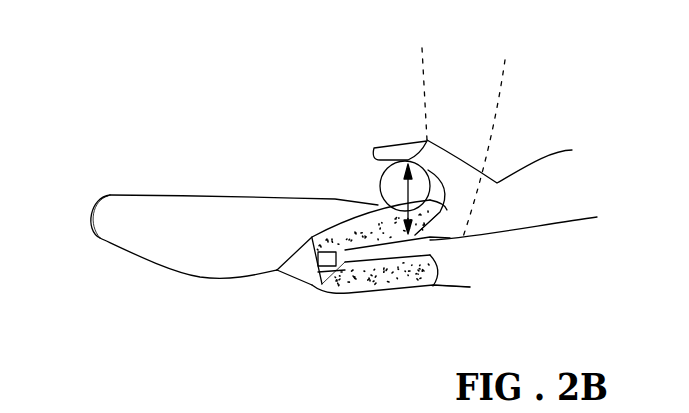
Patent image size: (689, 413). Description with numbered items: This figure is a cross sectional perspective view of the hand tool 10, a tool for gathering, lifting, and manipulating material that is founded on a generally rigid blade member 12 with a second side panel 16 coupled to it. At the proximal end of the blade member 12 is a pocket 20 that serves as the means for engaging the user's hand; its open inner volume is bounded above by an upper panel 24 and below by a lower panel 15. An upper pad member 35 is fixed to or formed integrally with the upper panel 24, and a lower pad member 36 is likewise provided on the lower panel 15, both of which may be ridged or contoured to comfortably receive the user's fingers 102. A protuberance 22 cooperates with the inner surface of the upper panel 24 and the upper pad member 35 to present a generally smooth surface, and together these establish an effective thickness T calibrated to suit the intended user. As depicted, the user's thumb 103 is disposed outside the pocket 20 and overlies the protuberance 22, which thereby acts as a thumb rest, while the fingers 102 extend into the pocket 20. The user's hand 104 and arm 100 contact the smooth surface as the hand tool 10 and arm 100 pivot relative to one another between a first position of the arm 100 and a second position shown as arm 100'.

The hand tool 10 is at (232, 130).
The blade member 12 is at (128, 250).
The second side panel 16 is at (115, 215).
The pocket 20 is at (288, 272).
The upper panel 24 is at (316, 243).
The upper pad member 35 is at (310, 237).
The protuberance 22 is at (360, 207).
The effective thickness T is at (393, 193).
The thumb 103 is at (392, 140).
The arm in second position 100' is at (424, 141).
The arm 100 is at (512, 214).
The hand 104 is at (428, 240).
The lower panel 15 is at (373, 295).
The lower pad member 36 is at (320, 293).
The fingers 102 is at (433, 280).